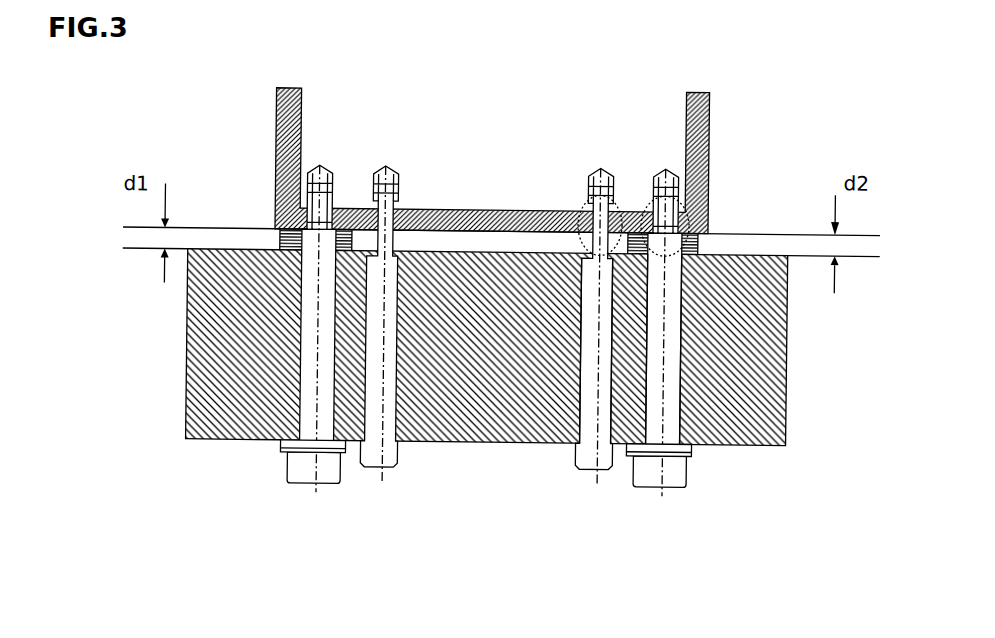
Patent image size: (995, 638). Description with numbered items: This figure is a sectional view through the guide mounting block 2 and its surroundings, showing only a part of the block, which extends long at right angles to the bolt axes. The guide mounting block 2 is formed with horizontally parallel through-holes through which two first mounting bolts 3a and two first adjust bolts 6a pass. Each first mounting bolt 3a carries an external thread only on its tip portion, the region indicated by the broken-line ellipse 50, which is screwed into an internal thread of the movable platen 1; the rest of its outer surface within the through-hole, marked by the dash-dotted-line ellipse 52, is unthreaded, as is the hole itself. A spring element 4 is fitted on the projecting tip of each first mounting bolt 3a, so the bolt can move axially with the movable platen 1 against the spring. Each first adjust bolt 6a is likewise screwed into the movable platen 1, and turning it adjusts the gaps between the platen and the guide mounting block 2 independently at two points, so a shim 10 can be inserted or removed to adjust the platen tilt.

The movable platen 1 is at (345, 127).
The guide mounting block 2 is at (755, 278).
The first mounting bolt 3a is at (290, 475).
The spring element 4 is at (278, 226).
The first adjust bolt 6a is at (380, 462).
The shim 10 is at (282, 440).
The broken-line ellipse 50 is at (700, 206).
The dash-dotted-line ellipse 52 is at (573, 383).